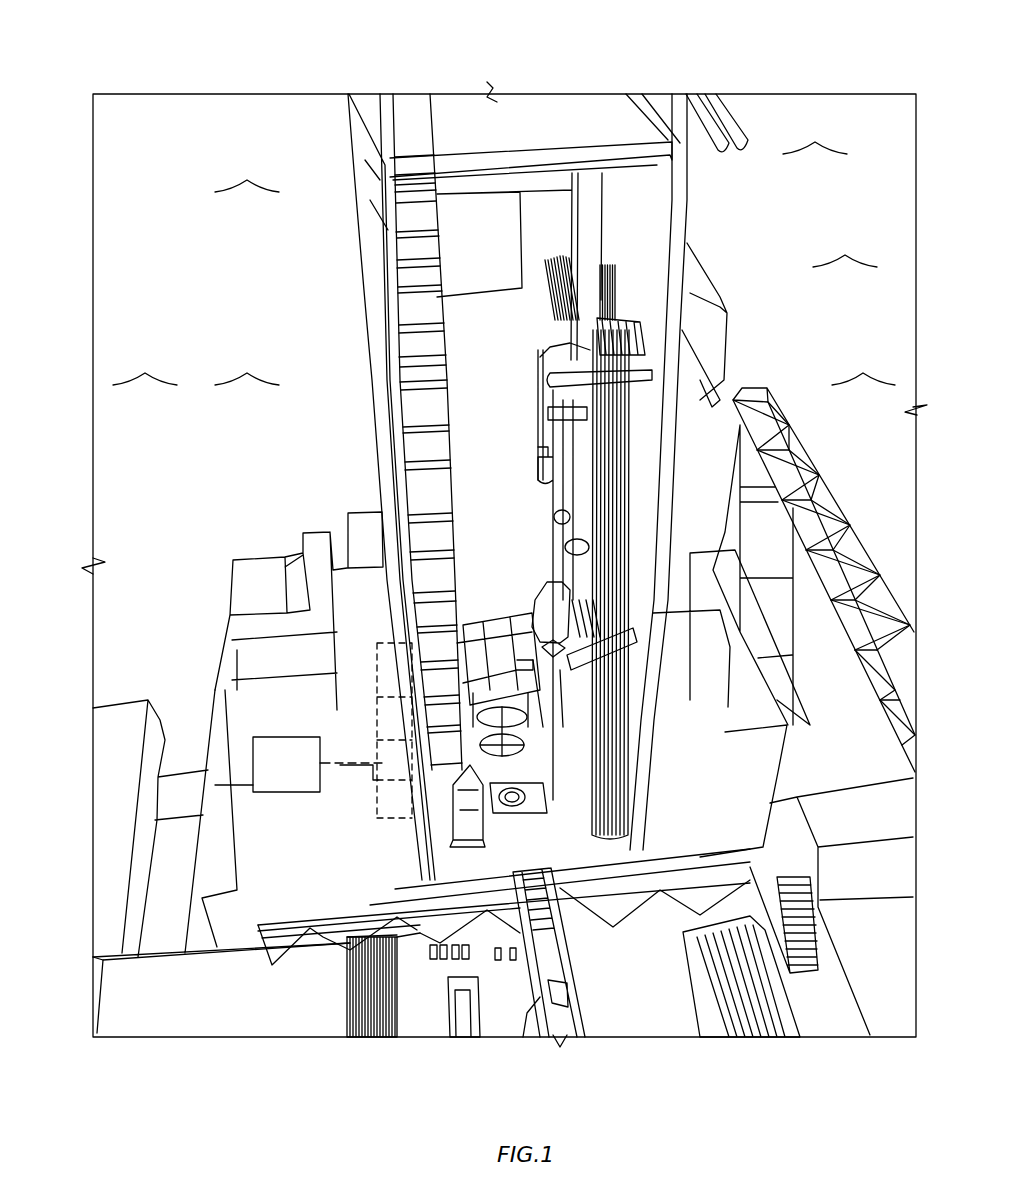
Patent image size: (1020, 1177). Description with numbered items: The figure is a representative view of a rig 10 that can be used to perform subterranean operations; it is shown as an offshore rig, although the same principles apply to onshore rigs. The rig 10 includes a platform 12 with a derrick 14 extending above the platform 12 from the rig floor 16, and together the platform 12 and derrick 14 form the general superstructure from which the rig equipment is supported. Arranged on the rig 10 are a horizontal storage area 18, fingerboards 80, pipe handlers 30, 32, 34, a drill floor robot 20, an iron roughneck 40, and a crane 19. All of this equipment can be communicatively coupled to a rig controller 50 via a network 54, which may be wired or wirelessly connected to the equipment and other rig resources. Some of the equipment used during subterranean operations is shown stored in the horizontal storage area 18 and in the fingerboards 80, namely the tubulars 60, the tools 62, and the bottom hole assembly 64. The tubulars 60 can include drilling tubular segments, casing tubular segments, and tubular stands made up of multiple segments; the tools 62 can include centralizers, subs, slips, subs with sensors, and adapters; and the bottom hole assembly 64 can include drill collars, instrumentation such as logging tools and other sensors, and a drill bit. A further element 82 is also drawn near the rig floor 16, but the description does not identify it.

The rig 10 is at (172, 82).
The platform 12 is at (150, 660).
The derrick 14 is at (378, 288).
The rig floor 16 is at (555, 838).
The horizontal storage area 18 is at (645, 988).
The crane 19 is at (872, 557).
The drill floor robot 20 is at (453, 832).
The pipe handler 30 is at (522, 1037).
The pipe handler 32 is at (563, 653).
The pipe handler 34 is at (550, 437).
The iron roughneck 40 is at (480, 687).
The rig controller 50 is at (300, 771).
The network 54 is at (380, 662).
The tubulars 60 is at (690, 400).
The tools 62 is at (372, 1032).
The bottom hole assembly 64 is at (453, 1030).
The fingerboards 80 is at (548, 357).
The rotary table 82 is at (530, 800).